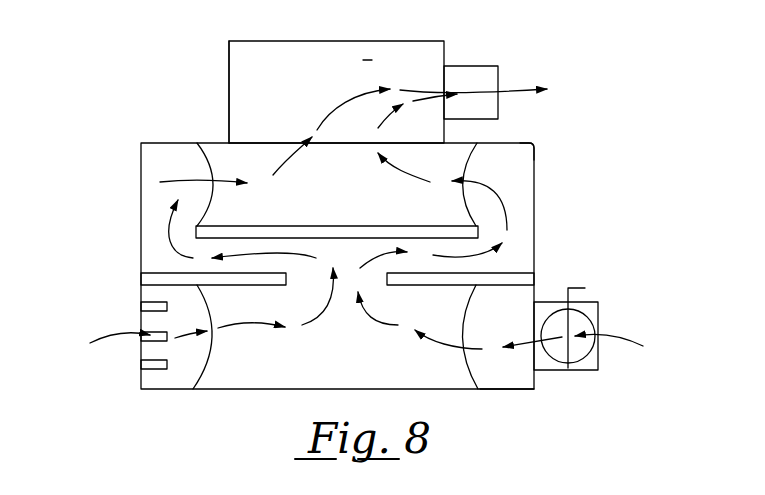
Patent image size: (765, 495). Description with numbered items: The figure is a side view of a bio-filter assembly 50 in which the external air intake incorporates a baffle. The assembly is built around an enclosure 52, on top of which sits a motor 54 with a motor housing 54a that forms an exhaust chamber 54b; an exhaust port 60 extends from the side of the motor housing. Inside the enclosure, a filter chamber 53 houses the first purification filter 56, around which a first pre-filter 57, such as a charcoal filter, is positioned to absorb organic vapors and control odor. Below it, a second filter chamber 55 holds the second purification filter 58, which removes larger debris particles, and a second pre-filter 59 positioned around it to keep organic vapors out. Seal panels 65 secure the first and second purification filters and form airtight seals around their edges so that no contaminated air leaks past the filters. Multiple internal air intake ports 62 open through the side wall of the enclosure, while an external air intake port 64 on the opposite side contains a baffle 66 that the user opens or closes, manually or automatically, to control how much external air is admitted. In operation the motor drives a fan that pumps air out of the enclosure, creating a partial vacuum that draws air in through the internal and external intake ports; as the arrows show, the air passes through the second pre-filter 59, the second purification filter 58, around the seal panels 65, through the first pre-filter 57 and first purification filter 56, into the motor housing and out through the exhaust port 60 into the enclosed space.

The bio-filter assembly 50 is at (108, 100).
The enclosure 52 is at (141, 157).
The filter chamber 53 is at (522, 152).
The motor 54 is at (300, 58).
The motor housing 54a is at (229, 70).
The exhaust chamber 54b is at (372, 60).
The second filter chamber 55 is at (522, 378).
The first purification filter 56 is at (222, 173).
The first pre-filter 57 is at (475, 218).
The second purification filter 58 is at (218, 302).
The second pre-filter 59 is at (477, 377).
The exhaust port 60 is at (498, 72).
The internal air intake ports 62 is at (141, 361).
The external air intake port 64 is at (598, 358).
The seal panels 65 is at (196, 238).
The baffle 66 is at (583, 313).